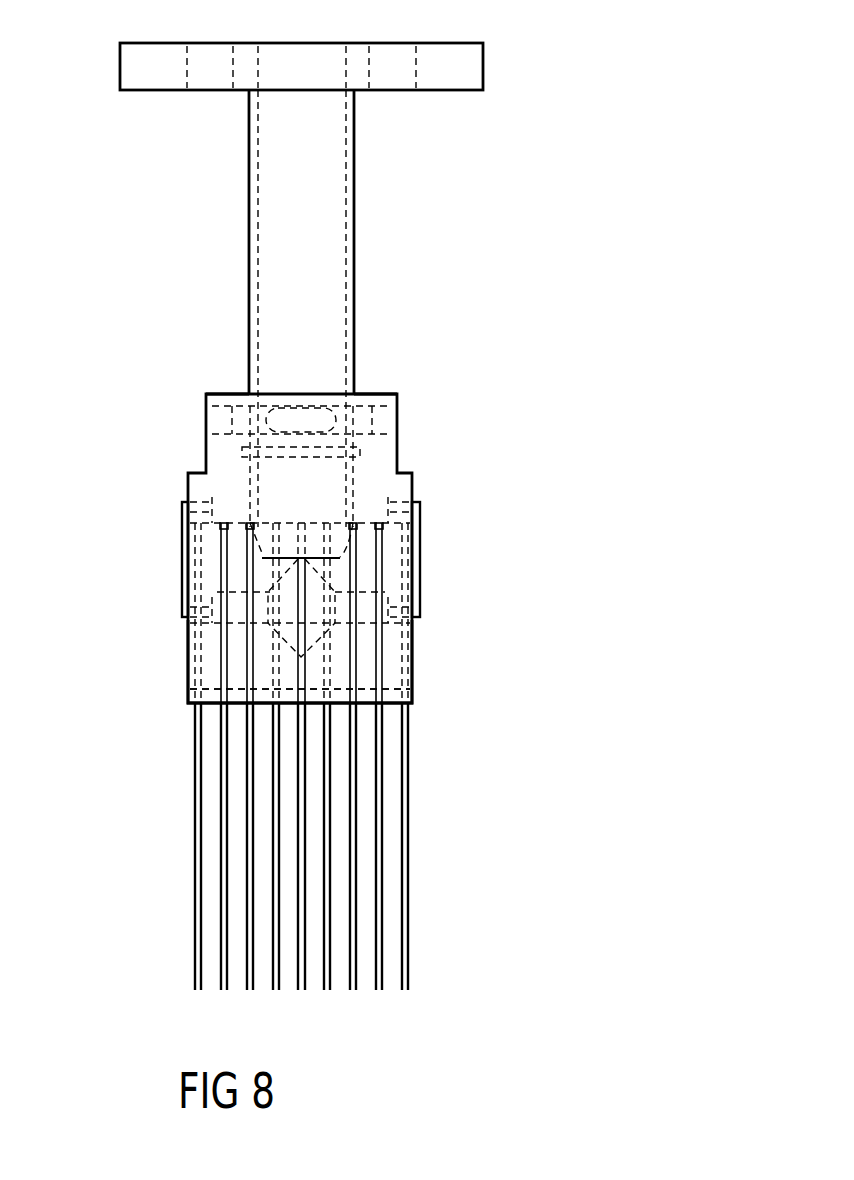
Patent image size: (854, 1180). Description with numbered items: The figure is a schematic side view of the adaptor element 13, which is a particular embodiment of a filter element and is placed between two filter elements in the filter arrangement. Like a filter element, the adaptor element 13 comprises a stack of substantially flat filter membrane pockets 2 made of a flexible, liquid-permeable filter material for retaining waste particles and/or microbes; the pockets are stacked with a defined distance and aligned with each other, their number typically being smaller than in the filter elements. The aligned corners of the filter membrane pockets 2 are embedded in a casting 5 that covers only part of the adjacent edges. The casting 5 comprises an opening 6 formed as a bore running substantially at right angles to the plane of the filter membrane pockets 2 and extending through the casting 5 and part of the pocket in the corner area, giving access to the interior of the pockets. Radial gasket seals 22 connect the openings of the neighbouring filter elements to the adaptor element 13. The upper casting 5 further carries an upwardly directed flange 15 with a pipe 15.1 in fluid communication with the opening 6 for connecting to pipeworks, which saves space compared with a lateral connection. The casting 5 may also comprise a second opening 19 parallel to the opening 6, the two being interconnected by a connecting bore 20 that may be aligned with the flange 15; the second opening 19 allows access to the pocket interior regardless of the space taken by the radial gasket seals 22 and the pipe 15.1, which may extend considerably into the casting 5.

The flange 15 is at (465, 63).
The pipe 15.1 is at (350, 249).
The adaptor element 13 is at (157, 425).
The casting 5 is at (395, 480).
The opening 6 is at (428, 572).
The radial gasket seal 22 is at (182, 508).
The connecting bore 20 is at (285, 578).
The second opening 19 is at (210, 670).
The filter membrane pocket 2 is at (407, 803).